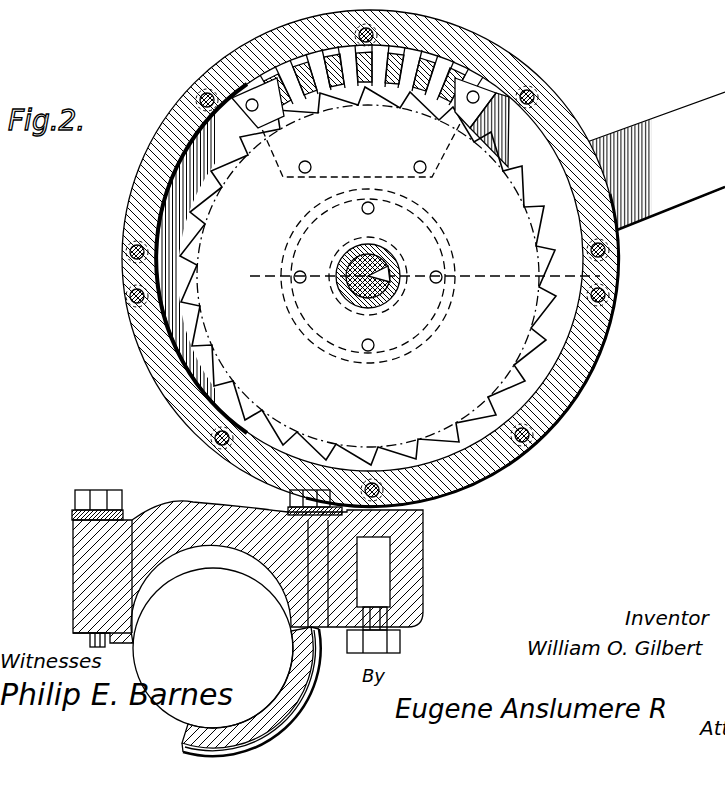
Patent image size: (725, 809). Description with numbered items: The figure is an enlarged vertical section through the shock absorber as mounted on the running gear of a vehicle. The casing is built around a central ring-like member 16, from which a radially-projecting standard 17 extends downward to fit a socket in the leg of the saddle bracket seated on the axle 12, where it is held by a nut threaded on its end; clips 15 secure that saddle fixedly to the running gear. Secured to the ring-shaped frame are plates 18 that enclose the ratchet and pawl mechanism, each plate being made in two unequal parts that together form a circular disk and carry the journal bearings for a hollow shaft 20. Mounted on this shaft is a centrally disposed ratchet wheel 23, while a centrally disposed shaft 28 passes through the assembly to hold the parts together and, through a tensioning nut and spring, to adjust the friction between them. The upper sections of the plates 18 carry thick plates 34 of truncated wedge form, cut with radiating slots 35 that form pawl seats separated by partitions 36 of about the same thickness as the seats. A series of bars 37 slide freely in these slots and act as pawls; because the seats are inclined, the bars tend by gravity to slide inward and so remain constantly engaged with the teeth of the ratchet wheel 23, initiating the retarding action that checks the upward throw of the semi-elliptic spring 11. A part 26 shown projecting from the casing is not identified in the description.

The spring 11 is at (413, 617).
The axle 12 is at (245, 611).
The clips 15 is at (266, 691).
The central ring-like member 16 is at (370, 258).
The radially-projecting standard 17 is at (383, 532).
The plates 18 is at (557, 232).
The hollow shaft 20 is at (400, 289).
The ratchet wheel 23 is at (398, 276).
The arm 26 is at (656, 173).
The centrally disposed shaft 28 is at (377, 293).
The plates 34 is at (292, 160).
The radiating slots 35 is at (412, 63).
The partitions 36 is at (284, 68).
The bars 37 is at (485, 97).